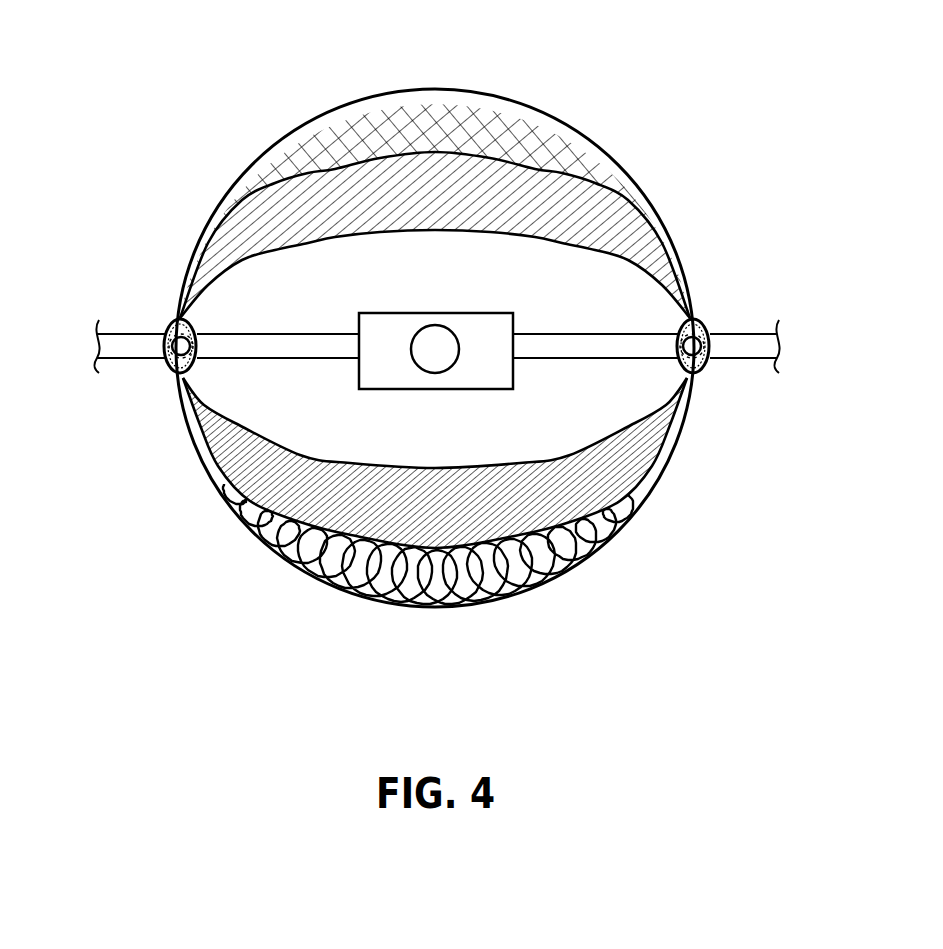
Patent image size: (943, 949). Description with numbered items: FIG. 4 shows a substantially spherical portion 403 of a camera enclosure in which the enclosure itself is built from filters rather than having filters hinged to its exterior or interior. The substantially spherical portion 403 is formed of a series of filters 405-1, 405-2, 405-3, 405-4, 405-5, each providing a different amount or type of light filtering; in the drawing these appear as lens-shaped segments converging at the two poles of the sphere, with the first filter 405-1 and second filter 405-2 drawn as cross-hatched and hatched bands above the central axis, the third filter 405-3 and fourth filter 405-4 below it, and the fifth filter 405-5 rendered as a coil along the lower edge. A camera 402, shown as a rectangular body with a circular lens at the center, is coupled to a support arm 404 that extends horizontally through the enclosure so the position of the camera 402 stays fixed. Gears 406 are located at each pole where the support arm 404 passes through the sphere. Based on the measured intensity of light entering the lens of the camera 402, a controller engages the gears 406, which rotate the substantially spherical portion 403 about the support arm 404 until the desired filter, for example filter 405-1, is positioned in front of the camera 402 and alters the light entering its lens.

The camera 402 is at (493, 341).
The substantially spherical portion of the camera enclosure 403 is at (678, 75).
The support arm 404 is at (735, 345).
The filter 405-1 is at (457, 110).
The filter 405-2 is at (313, 193).
The filter 405-3 is at (265, 372).
The fourth petal segment 405-4 is at (265, 543).
The fifth petal segment (coil) 405-5 is at (380, 592).
The gears 406 is at (177, 320).